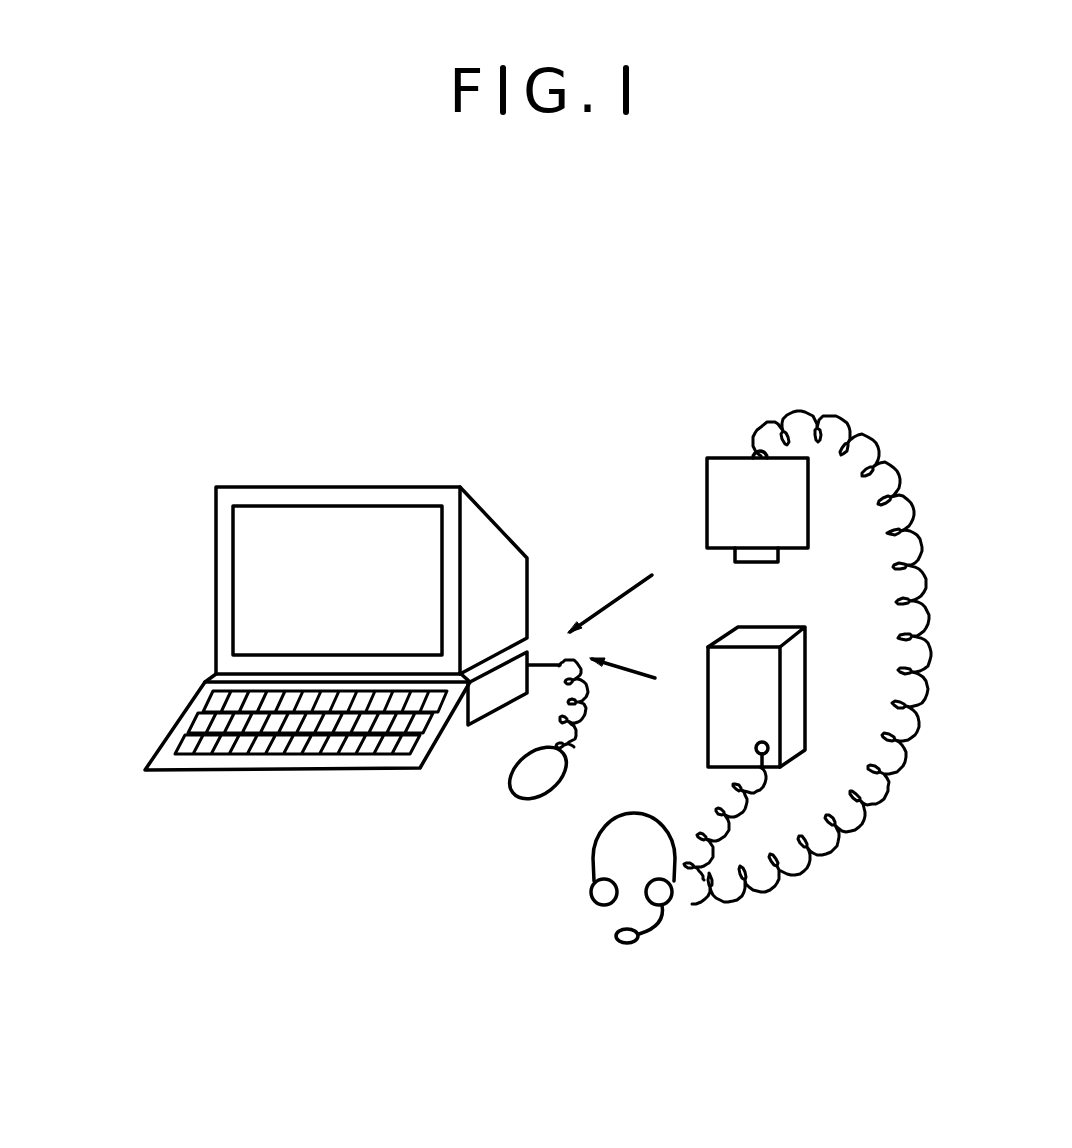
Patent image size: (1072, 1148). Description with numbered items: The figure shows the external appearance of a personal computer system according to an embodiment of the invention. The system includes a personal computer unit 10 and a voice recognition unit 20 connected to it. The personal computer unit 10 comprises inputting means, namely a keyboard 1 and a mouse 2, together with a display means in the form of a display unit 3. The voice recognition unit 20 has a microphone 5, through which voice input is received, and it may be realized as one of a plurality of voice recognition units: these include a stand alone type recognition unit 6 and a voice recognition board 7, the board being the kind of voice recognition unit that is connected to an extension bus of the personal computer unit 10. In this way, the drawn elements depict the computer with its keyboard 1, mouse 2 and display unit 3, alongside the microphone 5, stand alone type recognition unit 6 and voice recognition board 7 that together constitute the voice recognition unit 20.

The personal computer unit 10 is at (181, 491).
The keyboard 1 is at (350, 772).
The mouse 2 is at (508, 800).
The display unit 3 is at (453, 487).
The microphone 5 is at (593, 903).
The stand alone type recognition unit 6 is at (808, 657).
The voice recognition board 7 is at (710, 457).
The voice recognition unit 20 is at (936, 503).